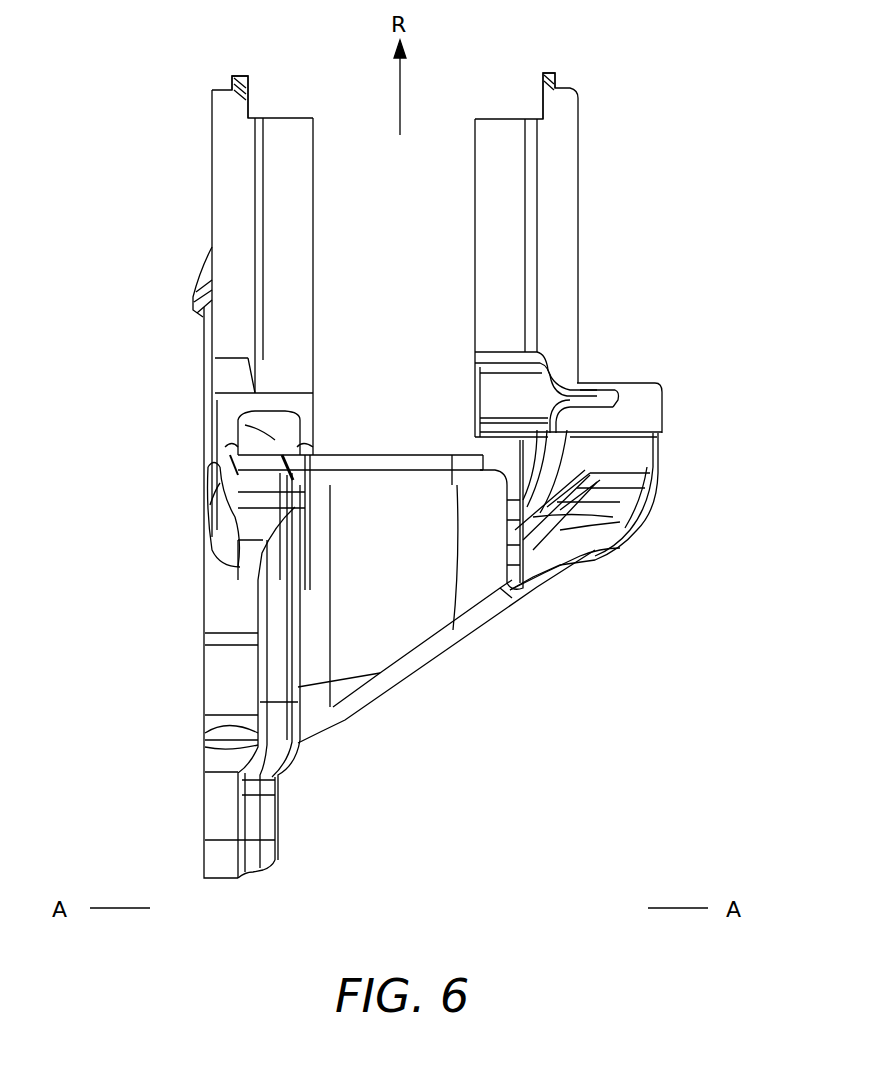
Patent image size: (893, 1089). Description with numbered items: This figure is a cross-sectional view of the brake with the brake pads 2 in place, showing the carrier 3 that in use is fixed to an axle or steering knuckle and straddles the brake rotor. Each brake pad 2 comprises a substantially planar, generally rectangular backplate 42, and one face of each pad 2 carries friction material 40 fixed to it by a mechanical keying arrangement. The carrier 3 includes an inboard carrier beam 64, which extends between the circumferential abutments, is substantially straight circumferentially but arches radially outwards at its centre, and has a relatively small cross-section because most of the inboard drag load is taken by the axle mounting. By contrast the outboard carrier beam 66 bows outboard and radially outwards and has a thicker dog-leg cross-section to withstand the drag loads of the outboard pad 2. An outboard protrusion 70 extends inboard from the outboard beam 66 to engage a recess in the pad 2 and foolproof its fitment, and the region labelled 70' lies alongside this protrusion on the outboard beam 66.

The brake pad 2 is at (212, 117).
The friction material 40 is at (293, 119).
The backplate 42 is at (225, 187).
The inboard carrier beam 64 is at (255, 438).
The outboard carrier beam 66 is at (650, 403).
The outboard protrusion 70 is at (521, 421).
The fastening portion 70' is at (527, 387).
The carrier 3 is at (660, 532).